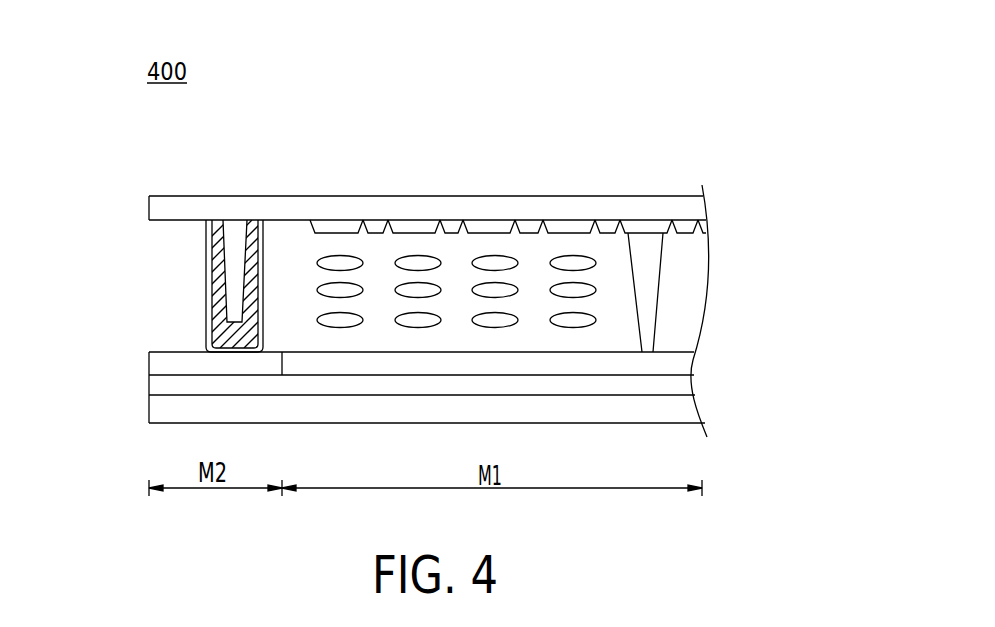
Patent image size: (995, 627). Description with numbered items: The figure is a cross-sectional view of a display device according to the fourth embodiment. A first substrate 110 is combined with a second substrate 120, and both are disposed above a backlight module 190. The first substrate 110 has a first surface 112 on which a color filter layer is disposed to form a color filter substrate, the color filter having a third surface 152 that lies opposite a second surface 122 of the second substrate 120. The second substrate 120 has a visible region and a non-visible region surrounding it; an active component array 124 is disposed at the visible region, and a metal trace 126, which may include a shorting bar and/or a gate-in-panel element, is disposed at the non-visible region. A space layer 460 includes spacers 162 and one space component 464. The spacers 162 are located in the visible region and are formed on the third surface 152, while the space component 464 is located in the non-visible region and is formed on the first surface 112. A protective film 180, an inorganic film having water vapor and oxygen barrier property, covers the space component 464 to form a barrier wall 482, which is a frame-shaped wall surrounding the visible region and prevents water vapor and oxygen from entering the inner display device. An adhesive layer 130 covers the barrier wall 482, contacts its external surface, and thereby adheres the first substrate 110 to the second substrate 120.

The first substrate 110 is at (162, 208).
The first surface 112 is at (183, 231).
The second substrate 120 is at (160, 386).
The second surface 122 is at (676, 339).
The active component array 124 is at (673, 367).
The metal trace 126 is at (160, 365).
The adhesive layer 130 is at (211, 296).
The third surface 152 is at (695, 237).
The spacers 162 is at (647, 253).
The protective film 180 is at (233, 343).
The backlight module 190 is at (167, 411).
The space layer 460 is at (250, 146).
The space component 464 is at (232, 233).
The barrier wall 482 is at (271, 240).